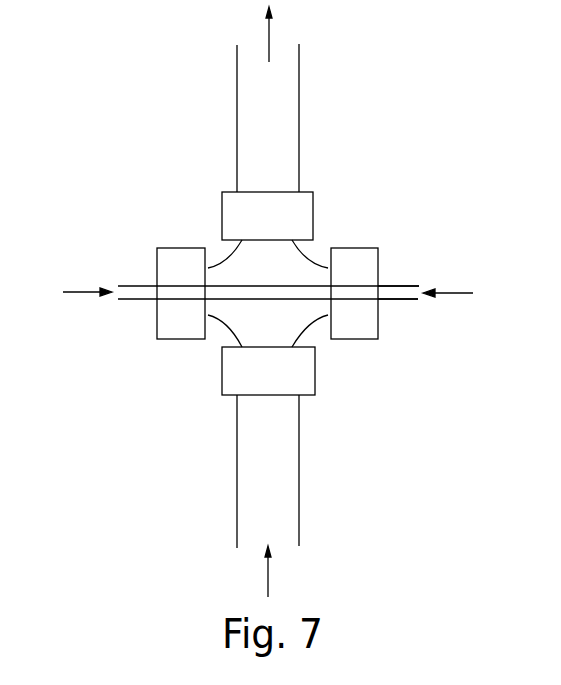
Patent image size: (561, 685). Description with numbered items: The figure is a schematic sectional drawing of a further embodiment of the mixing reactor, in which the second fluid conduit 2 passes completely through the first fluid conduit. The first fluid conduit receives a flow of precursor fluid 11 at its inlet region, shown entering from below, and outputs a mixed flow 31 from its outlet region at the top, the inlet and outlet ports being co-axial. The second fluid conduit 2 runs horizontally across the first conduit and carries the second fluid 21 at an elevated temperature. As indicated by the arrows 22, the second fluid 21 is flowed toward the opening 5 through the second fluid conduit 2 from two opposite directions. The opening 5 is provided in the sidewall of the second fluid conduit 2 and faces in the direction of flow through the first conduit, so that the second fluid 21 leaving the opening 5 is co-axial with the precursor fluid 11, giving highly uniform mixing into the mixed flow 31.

The mixed flow 31 is at (283, 122).
The precursor fluid 11 is at (283, 511).
The second fluid conduit 2 is at (302, 285).
The opening 5 is at (268, 286).
The second fluid 21 is at (396, 290).
The arrows 22 is at (93, 296).